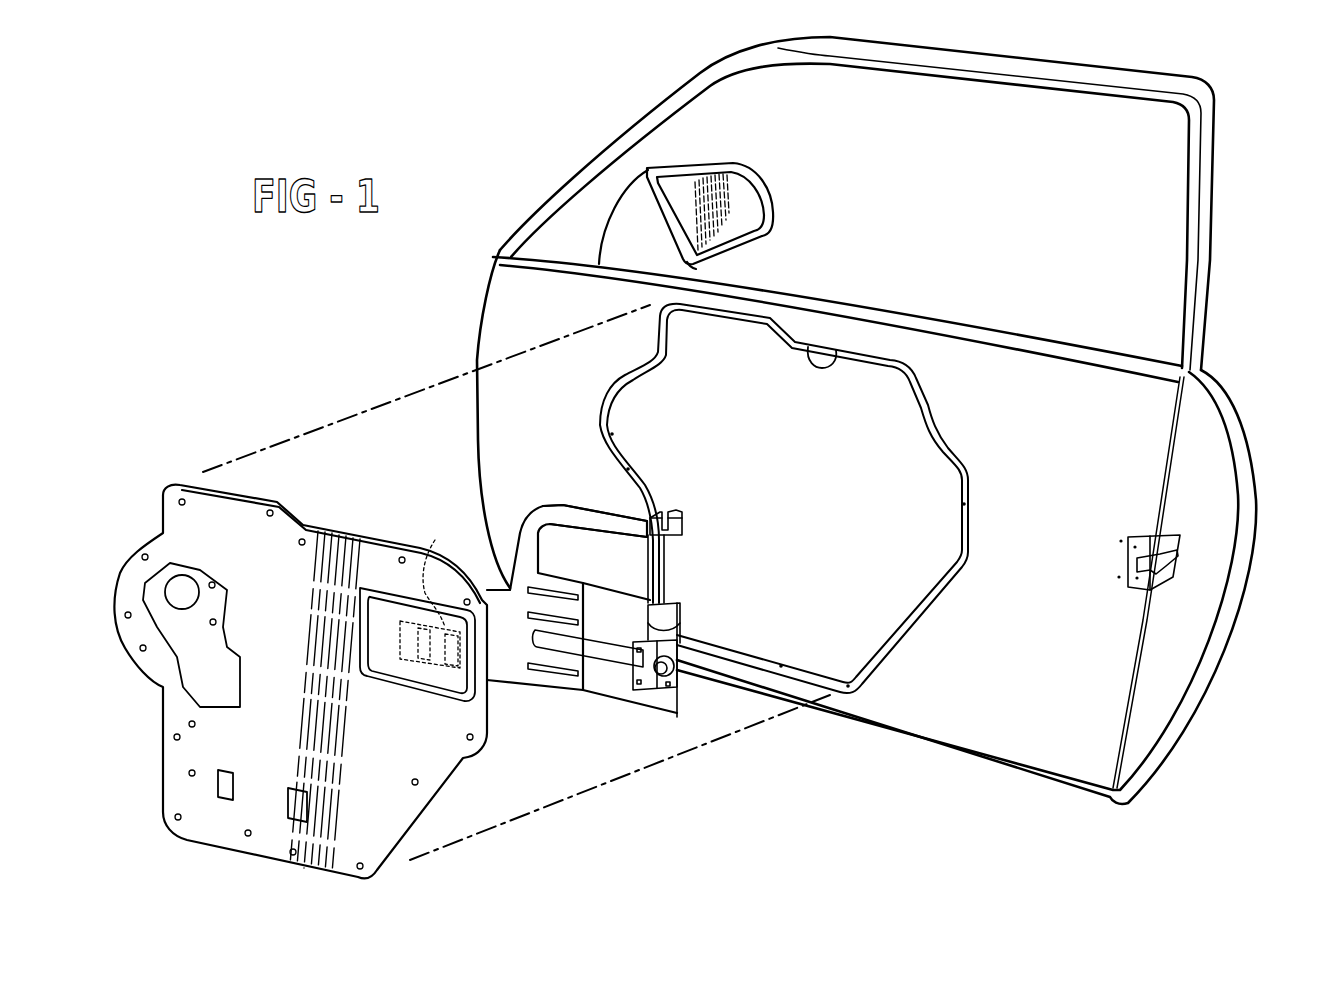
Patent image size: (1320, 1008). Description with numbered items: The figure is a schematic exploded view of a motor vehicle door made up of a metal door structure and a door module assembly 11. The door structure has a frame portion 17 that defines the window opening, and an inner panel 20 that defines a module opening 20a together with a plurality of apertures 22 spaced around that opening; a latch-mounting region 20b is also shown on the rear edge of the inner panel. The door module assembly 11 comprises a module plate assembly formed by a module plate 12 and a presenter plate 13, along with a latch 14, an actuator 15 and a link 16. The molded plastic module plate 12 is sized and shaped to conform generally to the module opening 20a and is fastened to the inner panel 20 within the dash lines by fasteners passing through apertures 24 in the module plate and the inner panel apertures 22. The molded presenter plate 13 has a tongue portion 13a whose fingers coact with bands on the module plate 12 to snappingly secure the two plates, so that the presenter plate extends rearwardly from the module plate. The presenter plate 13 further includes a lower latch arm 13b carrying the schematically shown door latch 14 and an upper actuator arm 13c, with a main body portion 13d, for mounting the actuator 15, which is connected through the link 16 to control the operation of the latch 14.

The door module assembly 11 is at (618, 755).
The module plate 12 is at (352, 530).
The presenter plate 13 is at (613, 616).
The tongue portion 13a is at (417, 608).
The lower latch arm 13b is at (603, 683).
The upper actuator arm 13c is at (597, 509).
The main body portion 13d is at (618, 518).
The door latch 14 is at (647, 688).
The actuator 15 is at (685, 515).
The link 16 is at (682, 615).
The frame portion 17 is at (1216, 119).
The inner panel 20 is at (877, 691).
The module opening 20a is at (850, 357).
The door latch 20b is at (1150, 588).
The apertures 22 is at (630, 370).
The apertures 24 is at (245, 837).